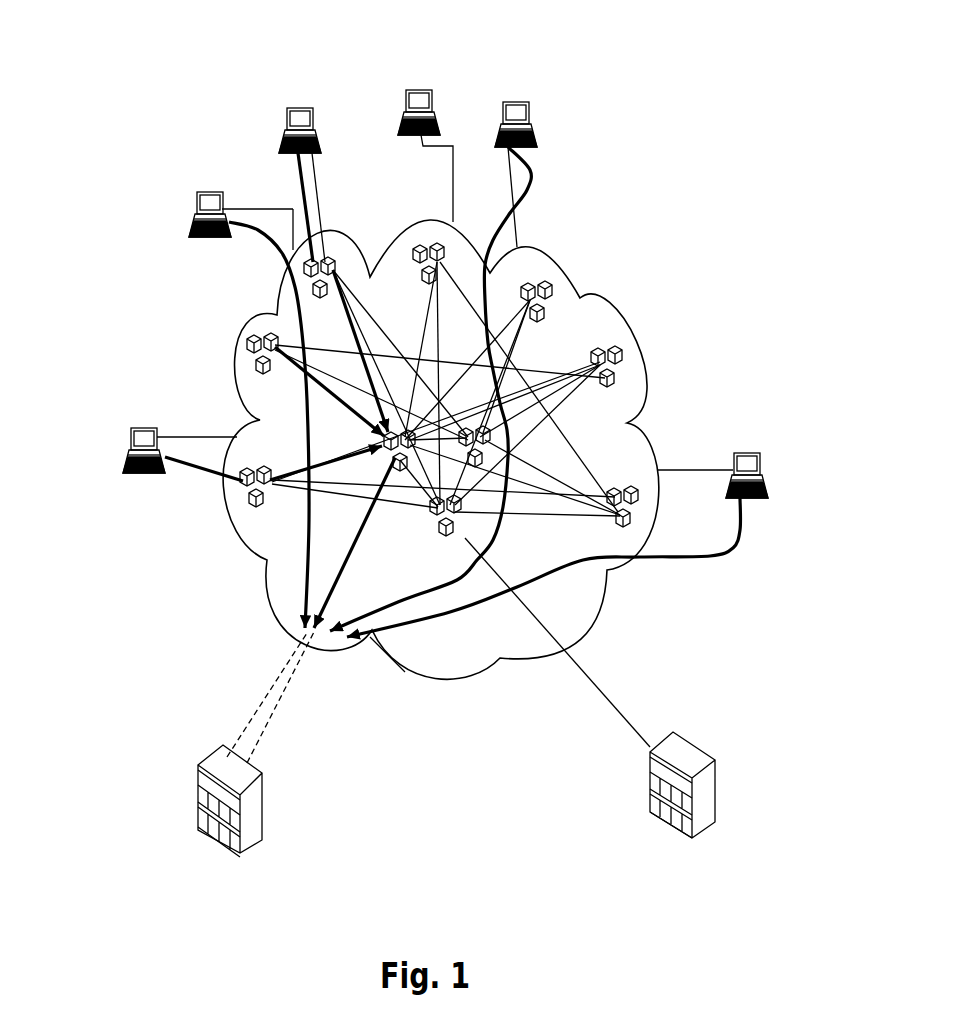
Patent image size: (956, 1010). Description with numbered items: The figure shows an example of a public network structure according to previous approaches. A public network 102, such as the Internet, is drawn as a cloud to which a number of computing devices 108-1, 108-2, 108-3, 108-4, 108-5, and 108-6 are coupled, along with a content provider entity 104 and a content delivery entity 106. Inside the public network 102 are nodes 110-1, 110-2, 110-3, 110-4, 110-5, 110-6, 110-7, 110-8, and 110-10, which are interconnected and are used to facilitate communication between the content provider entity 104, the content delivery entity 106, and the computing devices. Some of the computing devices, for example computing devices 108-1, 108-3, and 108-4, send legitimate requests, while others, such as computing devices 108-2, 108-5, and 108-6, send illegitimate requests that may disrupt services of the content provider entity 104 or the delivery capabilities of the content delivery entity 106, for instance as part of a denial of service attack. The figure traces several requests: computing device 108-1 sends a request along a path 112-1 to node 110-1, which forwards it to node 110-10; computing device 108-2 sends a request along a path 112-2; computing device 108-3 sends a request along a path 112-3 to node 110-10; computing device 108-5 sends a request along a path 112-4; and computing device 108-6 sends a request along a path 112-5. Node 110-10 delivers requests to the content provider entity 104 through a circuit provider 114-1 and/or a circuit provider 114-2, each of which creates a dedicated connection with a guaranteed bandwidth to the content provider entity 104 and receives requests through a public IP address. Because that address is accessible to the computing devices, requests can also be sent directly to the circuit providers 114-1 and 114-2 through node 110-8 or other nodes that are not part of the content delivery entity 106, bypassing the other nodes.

The public network 102 is at (480, 677).
The content provider entity 104 is at (262, 813).
The content delivery entity 106 is at (718, 793).
The computing device 108-1 is at (150, 427).
The computing device 108-2 is at (193, 205).
The computing device 108-3 is at (307, 107).
The computing device 108-4 is at (423, 88).
The computing device 108-5 is at (517, 100).
The computing device 108-6 is at (750, 453).
The node 110-1 is at (245, 495).
The node 110-2 is at (243, 345).
The node 110-3 is at (341, 258).
The node 110-4 is at (413, 240).
The node 110-5 is at (548, 305).
The node 110-6 is at (622, 368).
The node 110-7 is at (618, 485).
The node 110-8 is at (490, 452).
The node 110-10 is at (400, 465).
The path 112-1 is at (183, 468).
The path 112-2 is at (270, 247).
The path 112-3 is at (300, 167).
The path 112-4 is at (532, 193).
The path 112-5 is at (717, 560).
The circuit provider 114-1 is at (167, 680).
The circuit provider 114-2 is at (352, 760).